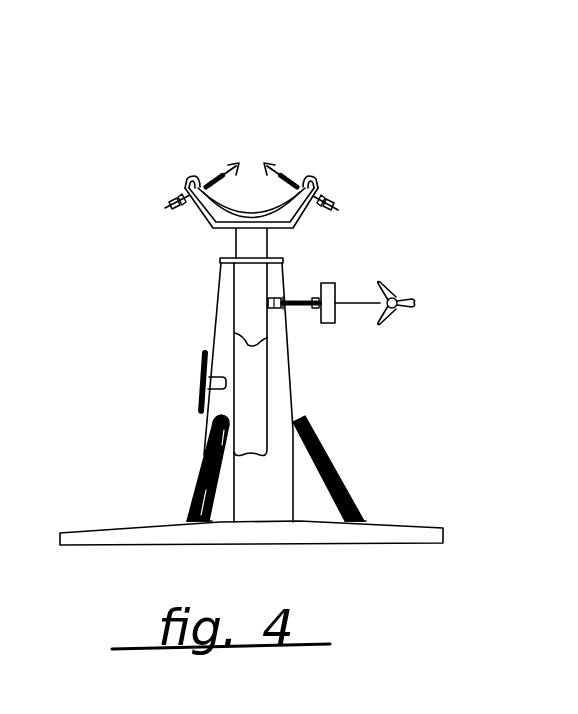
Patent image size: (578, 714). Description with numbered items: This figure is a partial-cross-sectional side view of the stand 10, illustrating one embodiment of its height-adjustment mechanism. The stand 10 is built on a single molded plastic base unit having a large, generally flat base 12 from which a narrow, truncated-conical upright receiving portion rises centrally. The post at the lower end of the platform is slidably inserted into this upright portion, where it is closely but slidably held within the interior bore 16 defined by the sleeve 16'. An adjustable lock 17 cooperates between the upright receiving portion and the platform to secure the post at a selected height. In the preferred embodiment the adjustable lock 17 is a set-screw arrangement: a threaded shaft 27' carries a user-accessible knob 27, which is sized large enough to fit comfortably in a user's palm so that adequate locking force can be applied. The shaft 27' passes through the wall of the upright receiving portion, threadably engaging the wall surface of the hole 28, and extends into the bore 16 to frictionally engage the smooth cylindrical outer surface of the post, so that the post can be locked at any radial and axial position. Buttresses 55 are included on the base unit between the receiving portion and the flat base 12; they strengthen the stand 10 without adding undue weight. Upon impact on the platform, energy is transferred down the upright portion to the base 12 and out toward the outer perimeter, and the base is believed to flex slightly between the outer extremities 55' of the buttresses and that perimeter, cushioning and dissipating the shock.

The stand 10 is at (273, 87).
The flat base 12 is at (100, 530).
The interior bore 16 is at (288, 361).
The sleeve 16' is at (190, 390).
The adjustable lock 17 is at (397, 200).
The knob 27 is at (366, 279).
The threaded shaft 27' is at (324, 353).
The hole 28 is at (276, 296).
The buttresses 55 is at (265, 468).
The outer extremities of the buttresses 55' is at (287, 527).